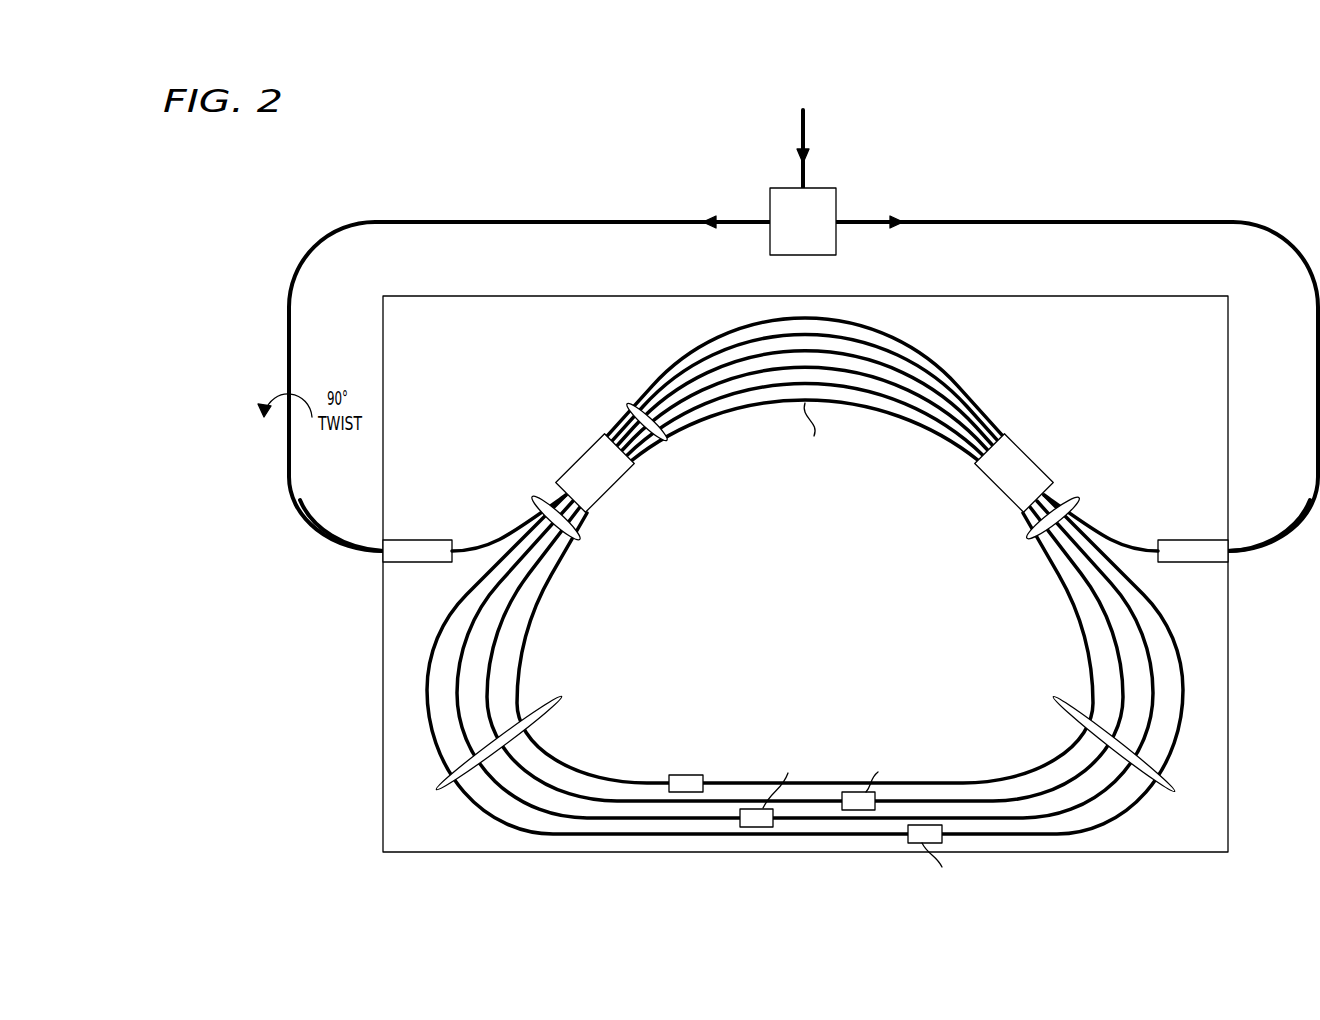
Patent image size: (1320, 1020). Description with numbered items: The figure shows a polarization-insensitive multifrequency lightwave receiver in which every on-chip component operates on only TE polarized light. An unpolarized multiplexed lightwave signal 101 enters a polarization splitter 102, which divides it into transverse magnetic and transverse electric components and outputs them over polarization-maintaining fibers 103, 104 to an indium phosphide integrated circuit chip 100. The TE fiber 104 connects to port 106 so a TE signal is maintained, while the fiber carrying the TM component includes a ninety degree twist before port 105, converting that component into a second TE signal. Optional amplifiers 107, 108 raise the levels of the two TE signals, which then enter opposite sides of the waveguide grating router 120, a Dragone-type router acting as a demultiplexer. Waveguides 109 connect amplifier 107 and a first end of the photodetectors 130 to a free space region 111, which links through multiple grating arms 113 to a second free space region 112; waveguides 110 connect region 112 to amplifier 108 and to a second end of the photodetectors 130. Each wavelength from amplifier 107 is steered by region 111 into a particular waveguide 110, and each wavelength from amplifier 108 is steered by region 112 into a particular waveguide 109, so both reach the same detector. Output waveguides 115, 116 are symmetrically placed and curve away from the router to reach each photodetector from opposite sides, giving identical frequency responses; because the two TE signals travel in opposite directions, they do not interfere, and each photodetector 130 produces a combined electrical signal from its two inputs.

The integrated circuit chip 100 is at (383, 731).
The lightwave signal 101 is at (802, 135).
The polarization splitter 102 is at (828, 187).
The polarization-maintaining fiber 103 is at (518, 221).
The polarization-maintaining fiber 104 is at (1093, 221).
The port 105 is at (379, 549).
The port 106 is at (1238, 548).
The amplifier 107 is at (428, 539).
The amplifier 108 is at (1182, 539).
The waveguides 109 is at (541, 499).
The waveguides 110 is at (1077, 498).
The free space region 111 is at (584, 452).
The free space region 112 is at (1027, 448).
The grating arms 113 is at (627, 405).
The waveguide 115 is at (557, 698).
The waveguide 116 is at (1053, 698).
The waveguide grating router 120 is at (1022, 528).
The photodetectors 130 is at (720, 775).